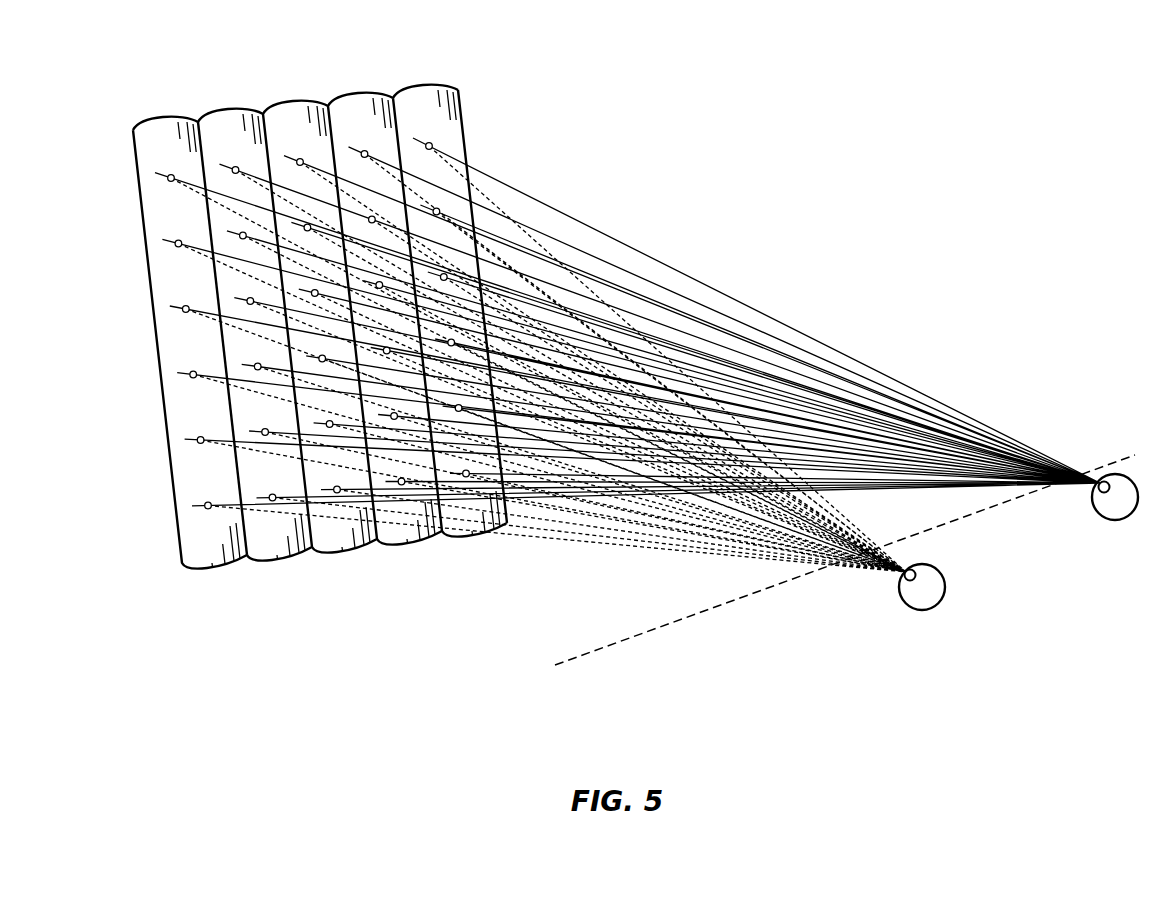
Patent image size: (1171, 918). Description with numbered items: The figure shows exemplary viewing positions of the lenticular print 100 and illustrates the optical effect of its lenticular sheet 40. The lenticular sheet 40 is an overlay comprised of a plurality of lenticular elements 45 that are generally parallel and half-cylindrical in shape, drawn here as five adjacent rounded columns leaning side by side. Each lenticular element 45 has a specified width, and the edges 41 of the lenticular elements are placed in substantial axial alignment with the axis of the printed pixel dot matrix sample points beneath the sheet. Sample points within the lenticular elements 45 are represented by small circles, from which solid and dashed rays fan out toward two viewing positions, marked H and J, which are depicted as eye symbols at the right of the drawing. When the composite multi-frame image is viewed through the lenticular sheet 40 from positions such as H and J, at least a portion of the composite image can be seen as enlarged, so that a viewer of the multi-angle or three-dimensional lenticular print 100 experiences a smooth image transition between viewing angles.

The lenticular print 100 is at (473, 83).
The lenticular sheet 40 is at (232, 110).
The lenticular element 45 is at (168, 138).
The edge of lenticular element 41 is at (232, 412).
The viewer eye H is at (920, 610).
The viewer eye J is at (1113, 520).